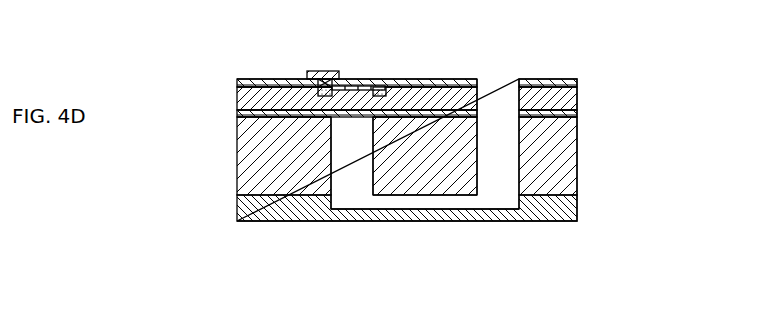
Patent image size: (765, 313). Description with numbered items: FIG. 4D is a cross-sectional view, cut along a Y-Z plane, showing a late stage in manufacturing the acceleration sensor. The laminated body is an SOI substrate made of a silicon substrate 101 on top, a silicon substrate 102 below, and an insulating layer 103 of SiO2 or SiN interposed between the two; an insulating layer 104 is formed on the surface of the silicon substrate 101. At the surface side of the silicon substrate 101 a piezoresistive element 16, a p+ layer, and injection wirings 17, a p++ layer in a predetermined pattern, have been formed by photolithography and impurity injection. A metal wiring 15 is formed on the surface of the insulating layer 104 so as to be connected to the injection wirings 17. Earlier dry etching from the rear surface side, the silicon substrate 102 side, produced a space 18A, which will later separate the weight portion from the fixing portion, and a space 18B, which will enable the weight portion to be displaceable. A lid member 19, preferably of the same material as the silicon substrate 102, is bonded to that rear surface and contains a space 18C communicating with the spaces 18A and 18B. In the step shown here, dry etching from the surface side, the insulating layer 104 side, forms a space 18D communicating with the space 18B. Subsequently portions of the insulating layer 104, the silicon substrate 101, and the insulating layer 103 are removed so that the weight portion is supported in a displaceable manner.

The silicon substrate 101 is at (237, 97).
The silicon substrate 102 is at (237, 136).
The insulating layer 103 is at (577, 112).
The insulating layer 104 is at (577, 82).
The lid member 19 is at (237, 212).
The metal wiring 15 is at (317, 72).
The piezoresistive element 16 is at (354, 87).
The injection wirings 17 is at (316, 89).
The space 18A is at (351, 187).
The space 18B is at (491, 186).
The space 18C is at (432, 202).
The space 18D is at (502, 97).